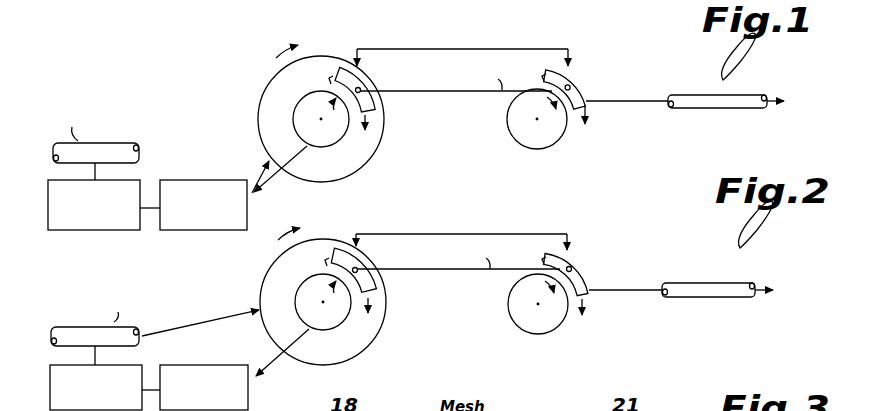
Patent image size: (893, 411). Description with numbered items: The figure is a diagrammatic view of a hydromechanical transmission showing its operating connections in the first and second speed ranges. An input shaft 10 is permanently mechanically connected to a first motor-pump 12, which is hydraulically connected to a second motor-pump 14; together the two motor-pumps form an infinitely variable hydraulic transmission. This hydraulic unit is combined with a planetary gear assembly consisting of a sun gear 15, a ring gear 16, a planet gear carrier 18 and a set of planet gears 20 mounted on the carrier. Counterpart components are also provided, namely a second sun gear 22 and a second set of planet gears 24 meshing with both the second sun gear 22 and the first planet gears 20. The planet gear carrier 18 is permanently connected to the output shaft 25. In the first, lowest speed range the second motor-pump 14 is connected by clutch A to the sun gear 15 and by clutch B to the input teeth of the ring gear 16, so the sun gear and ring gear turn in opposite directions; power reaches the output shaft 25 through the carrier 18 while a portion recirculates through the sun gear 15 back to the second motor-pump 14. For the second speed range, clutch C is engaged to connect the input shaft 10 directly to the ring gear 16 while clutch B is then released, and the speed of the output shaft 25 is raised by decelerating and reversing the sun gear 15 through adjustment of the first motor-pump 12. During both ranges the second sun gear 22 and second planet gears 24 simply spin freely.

In FIG. 1, the input shaft 10 is at (126, 143).
In FIG. 2, the input shaft 10 is at (128, 330).
In FIG. 1, the first motor-pump 12 is at (48, 193).
In FIG. 2, the first motor-pump 12 is at (50, 383).
In FIG. 1, the second motor-pump 14 is at (169, 186).
In FIG. 2, the second motor-pump 14 is at (167, 370).
In FIG. 1, the sun gear 15 is at (336, 140).
In FIG. 2, the sun gear 15 is at (338, 323).
In FIG. 1, the ring gear 16 is at (264, 98).
In FIG. 2, the ring gear 16 is at (263, 280).
In FIG. 1, the planet gear carrier 18 is at (353, 63).
In FIG. 2, the planet gear carrier 18 is at (352, 247).
In FIG. 1, the set of planet gears 20 is at (381, 92).
In FIG. 2, the set of planet gears 20 is at (373, 269).
In FIG. 1, the second sun gear 22 is at (515, 121).
In FIG. 2, the second sun gear 22 is at (518, 308).
In FIG. 1, the second set of planet gears 24 is at (585, 70).
In FIG. 2, the second set of planet gears 24 is at (580, 258).
In FIG. 1, the output shaft 25 is at (710, 108).
In FIG. 2, the output shaft 25 is at (695, 285).
In FIG. 1, the first clutch A is at (271, 183).
In FIG. 2, the first clutch A is at (271, 367).
In FIG. 1, the second clutch B is at (259, 172).
In FIG. 2, the third clutch C is at (216, 319).